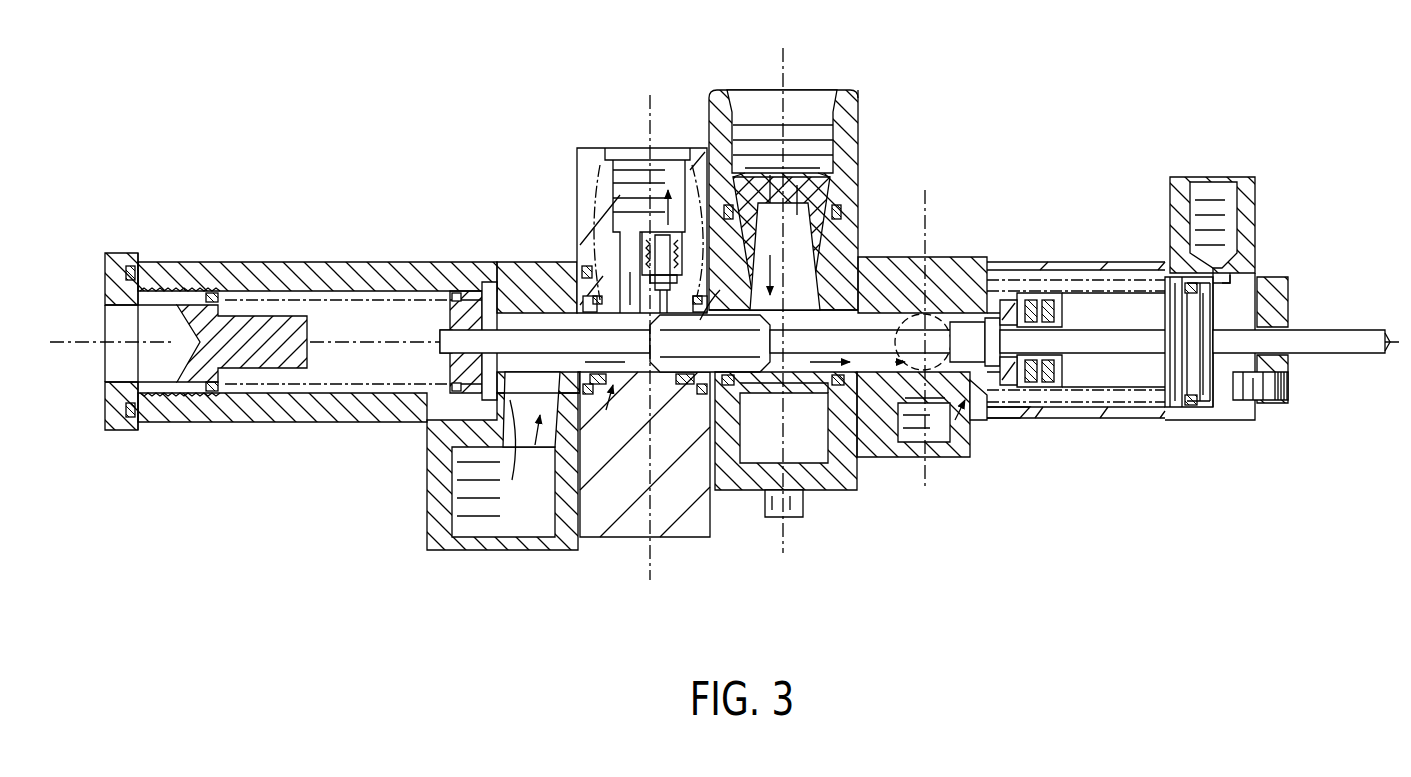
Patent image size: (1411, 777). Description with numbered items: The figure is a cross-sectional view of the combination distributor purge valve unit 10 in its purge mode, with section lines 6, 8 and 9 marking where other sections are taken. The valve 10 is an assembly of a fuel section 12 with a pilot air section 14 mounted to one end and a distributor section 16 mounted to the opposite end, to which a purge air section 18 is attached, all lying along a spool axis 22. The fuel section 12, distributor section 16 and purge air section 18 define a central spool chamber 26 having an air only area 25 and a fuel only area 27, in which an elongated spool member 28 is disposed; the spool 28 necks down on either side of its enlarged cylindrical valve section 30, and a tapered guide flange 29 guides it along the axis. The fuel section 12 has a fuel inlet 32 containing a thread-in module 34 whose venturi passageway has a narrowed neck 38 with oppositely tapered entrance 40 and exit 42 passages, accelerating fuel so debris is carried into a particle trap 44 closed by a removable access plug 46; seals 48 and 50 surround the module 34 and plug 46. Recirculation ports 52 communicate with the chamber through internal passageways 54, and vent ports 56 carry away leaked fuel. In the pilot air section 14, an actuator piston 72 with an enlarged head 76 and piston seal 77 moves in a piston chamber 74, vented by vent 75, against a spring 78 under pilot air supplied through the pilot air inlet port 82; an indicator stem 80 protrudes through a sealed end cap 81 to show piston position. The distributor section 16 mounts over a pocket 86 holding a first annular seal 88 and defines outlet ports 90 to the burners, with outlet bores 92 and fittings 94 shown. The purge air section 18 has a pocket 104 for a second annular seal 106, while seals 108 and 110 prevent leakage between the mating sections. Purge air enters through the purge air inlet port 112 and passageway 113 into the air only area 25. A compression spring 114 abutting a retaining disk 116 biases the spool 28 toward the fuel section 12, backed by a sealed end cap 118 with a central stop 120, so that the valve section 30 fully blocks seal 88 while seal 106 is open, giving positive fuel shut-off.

The combination distributor purge valve unit 10 is at (942, 76).
The fuel section 12 is at (864, 101).
The pilot air section 14 is at (1075, 425).
The distributor section 16 is at (572, 187).
The purge air section 18 is at (186, 430).
The spool axis 22 is at (1398, 335).
The air only area 25 is at (527, 325).
The central spool chamber 26 is at (862, 395).
The fuel only area 27 is at (862, 322).
The spool member 28 is at (583, 350).
The tapered guide flange 29 is at (965, 322).
The valve section 30 is at (712, 343).
The fuel inlet 32 is at (830, 88).
The thread-in module 34 is at (838, 188).
The narrowed neck 38 is at (795, 285).
The entrance passage 40 is at (778, 200).
The exit passage 42 is at (812, 248).
The particle trap 44 is at (784, 423).
The access plug 46 is at (820, 485).
The seal 48 is at (845, 213).
The seal 50 is at (728, 400).
The recirculation ports 52 is at (942, 452).
The internal passageways 54 is at (960, 405).
The vent ports 56 is at (938, 300).
The actuator piston 72 is at (1135, 322).
The piston chamber 74 is at (1113, 340).
The vent 75 is at (1010, 422).
The enlarged head 76 is at (1200, 395).
The piston seal 77 is at (1188, 395).
The spring 78 is at (1018, 300).
The indicator stem 80 is at (1348, 347).
The sealed end cap 81 is at (1275, 320).
The pilot air inlet port 82 is at (1225, 200).
The pocket 86 is at (680, 383).
The first annular seal 88 is at (672, 383).
The outlet ports 90 is at (657, 150).
The bore 92 is at (688, 235).
The fitting 94 is at (633, 255).
The pocket 104 is at (606, 383).
The second annular seal 106 is at (608, 378).
The seal 108 is at (698, 270).
The seal 110 is at (580, 275).
The purge air inlet port 112 is at (480, 550).
The passageway 113 is at (510, 428).
The compression spring 114 is at (212, 292).
The retaining disk 116 is at (447, 318).
The sealed end cap 118 is at (130, 417).
The central stop 120 is at (290, 340).
The section line 6 is at (650, 92).
The section line 8 is at (783, 40).
The section line 9 is at (925, 190).